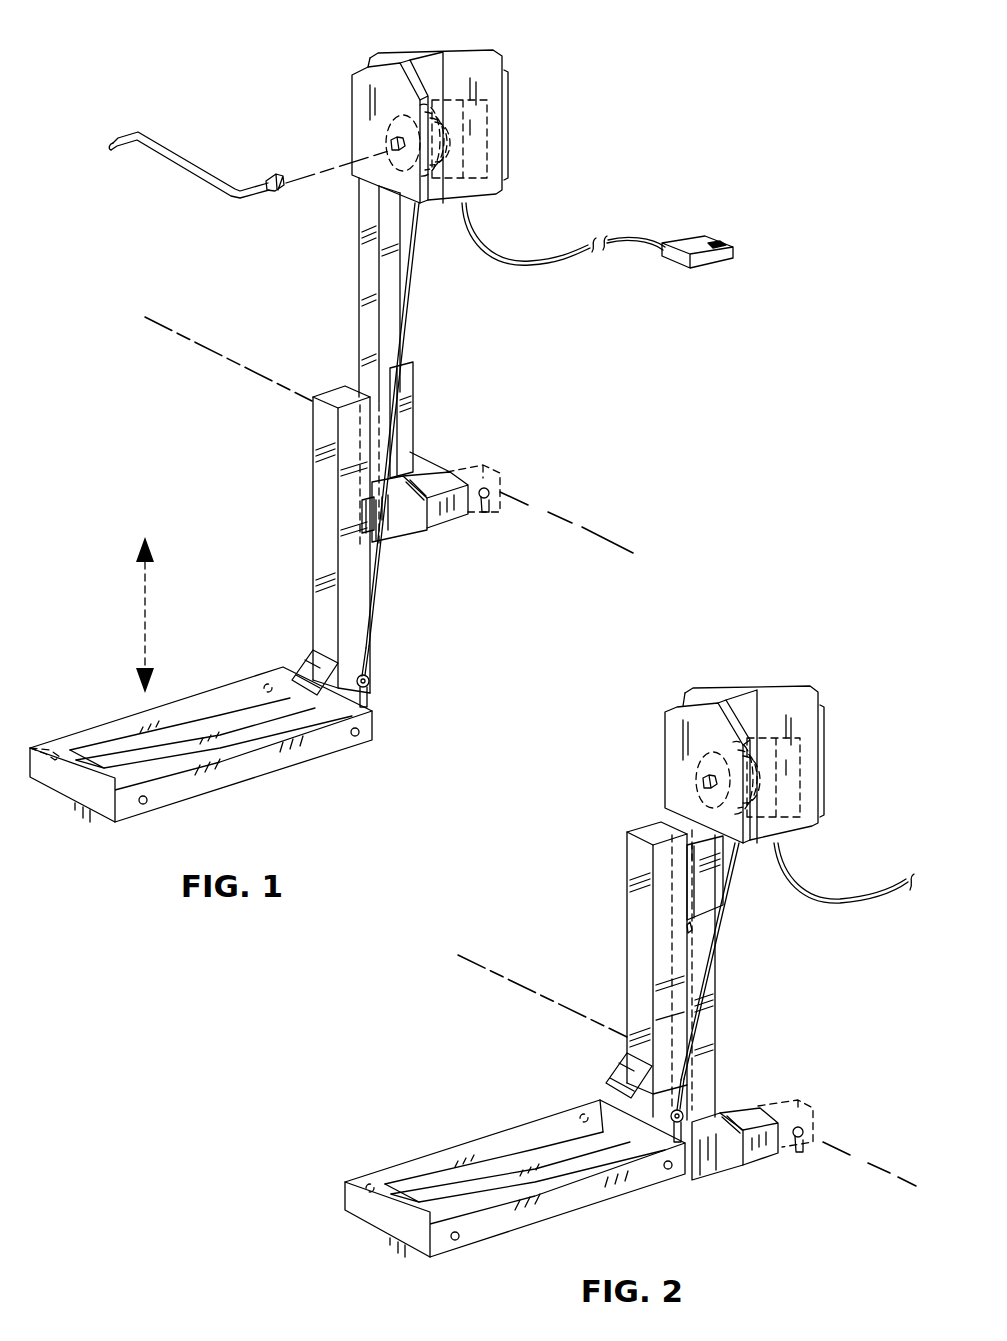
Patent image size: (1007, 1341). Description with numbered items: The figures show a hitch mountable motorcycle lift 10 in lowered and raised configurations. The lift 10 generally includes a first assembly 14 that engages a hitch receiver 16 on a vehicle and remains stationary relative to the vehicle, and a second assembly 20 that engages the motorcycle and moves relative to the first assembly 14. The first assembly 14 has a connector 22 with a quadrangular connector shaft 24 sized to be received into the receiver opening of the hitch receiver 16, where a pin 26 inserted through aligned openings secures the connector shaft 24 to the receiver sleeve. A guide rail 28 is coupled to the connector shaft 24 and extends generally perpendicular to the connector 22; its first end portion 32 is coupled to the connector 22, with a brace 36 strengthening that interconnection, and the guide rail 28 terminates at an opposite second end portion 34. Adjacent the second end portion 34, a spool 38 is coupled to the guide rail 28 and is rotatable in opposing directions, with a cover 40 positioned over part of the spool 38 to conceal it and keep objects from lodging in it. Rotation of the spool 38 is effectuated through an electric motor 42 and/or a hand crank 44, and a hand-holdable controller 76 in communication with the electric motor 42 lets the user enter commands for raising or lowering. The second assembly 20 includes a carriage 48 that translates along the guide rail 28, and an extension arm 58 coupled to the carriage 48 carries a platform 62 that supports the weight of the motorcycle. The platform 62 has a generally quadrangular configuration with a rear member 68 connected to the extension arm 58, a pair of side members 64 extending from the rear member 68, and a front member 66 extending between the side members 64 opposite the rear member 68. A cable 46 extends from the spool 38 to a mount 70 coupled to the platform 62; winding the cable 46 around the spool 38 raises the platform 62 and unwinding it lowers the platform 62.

In FIG. 1, the lift 10 is at (562, 76).
In FIG. 2, the lift 10 is at (875, 701).
In FIG. 1, the first assembly 14 is at (471, 532).
In FIG. 2, the first assembly 14 is at (776, 1159).
In FIG. 1, the hitch receiver 16 is at (514, 503).
In FIG. 2, the hitch receiver 16 is at (824, 1146).
In FIG. 1, the second assembly 20 is at (239, 691).
In FIG. 2, the second assembly 20 is at (515, 1179).
In FIG. 1, the connector 22 is at (458, 528).
In FIG. 2, the connector 22 is at (766, 1158).
In FIG. 1, the connector shaft 24 is at (455, 470).
In FIG. 2, the connector shaft 24 is at (760, 1112).
In FIG. 1, the pin 26 is at (489, 495).
In FIG. 2, the pin 26 is at (805, 1126).
In FIG. 1, the guide rail 28 is at (358, 291).
In FIG. 2, the guide rail 28 is at (712, 997).
In FIG. 2, the first end portion 32 is at (705, 1112).
In FIG. 1, the second end portion 34 is at (360, 193).
In FIG. 1, the brace 36 is at (425, 540).
In FIG. 2, the brace 36 is at (702, 1168).
In FIG. 1, the spool 38 is at (390, 141).
In FIG. 2, the spool 38 is at (702, 778).
In FIG. 1, the cover 40 is at (495, 178).
In FIG. 2, the cover 40 is at (808, 816).
In FIG. 1, the electric motor 42 is at (487, 130).
In FIG. 2, the electric motor 42 is at (800, 770).
In FIG. 1, the hand crank 44 is at (171, 160).
In FIG. 1, the cable 46 is at (412, 255).
In FIG. 2, the cable 46 is at (716, 941).
In FIG. 1, the carriage 48 is at (405, 418).
In FIG. 2, the carriage 48 is at (714, 894).
In FIG. 1, the extension arm 58 is at (320, 498).
In FIG. 2, the extension arm 58 is at (634, 934).
In FIG. 1, the platform 62 is at (201, 724).
In FIG. 2, the platform 62 is at (460, 1130).
In FIG. 1, the side members 64 is at (103, 722).
In FIG. 1, the front member 66 is at (78, 793).
In FIG. 1, the rear member 68 is at (300, 672).
In FIG. 1, the mount 70 is at (370, 695).
In FIG. 2, the mount 70 is at (673, 1140).
In FIG. 1, the controller 76 is at (690, 238).